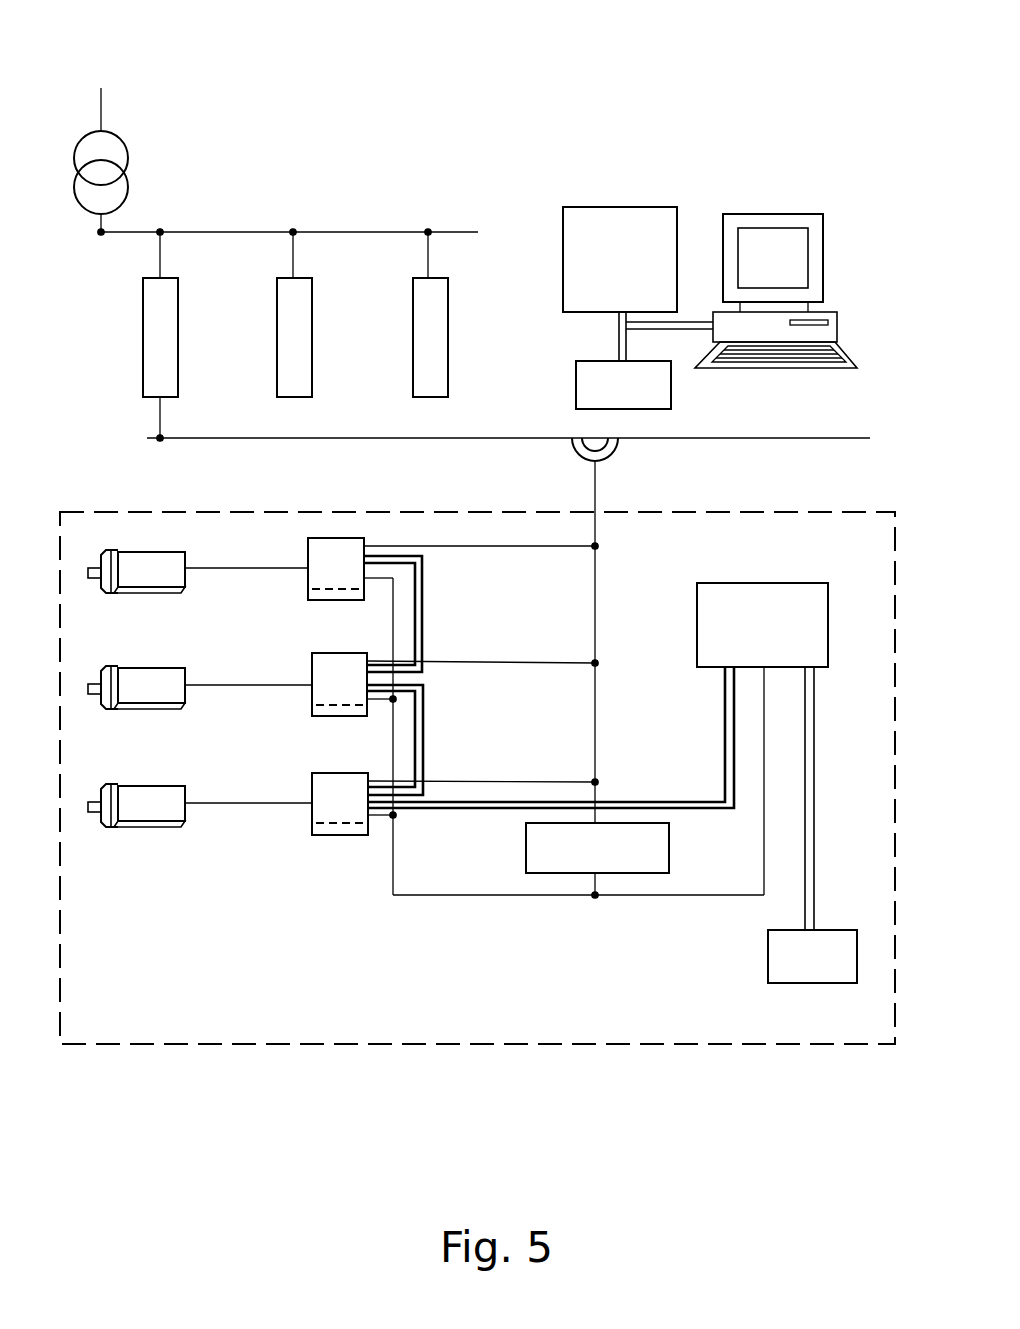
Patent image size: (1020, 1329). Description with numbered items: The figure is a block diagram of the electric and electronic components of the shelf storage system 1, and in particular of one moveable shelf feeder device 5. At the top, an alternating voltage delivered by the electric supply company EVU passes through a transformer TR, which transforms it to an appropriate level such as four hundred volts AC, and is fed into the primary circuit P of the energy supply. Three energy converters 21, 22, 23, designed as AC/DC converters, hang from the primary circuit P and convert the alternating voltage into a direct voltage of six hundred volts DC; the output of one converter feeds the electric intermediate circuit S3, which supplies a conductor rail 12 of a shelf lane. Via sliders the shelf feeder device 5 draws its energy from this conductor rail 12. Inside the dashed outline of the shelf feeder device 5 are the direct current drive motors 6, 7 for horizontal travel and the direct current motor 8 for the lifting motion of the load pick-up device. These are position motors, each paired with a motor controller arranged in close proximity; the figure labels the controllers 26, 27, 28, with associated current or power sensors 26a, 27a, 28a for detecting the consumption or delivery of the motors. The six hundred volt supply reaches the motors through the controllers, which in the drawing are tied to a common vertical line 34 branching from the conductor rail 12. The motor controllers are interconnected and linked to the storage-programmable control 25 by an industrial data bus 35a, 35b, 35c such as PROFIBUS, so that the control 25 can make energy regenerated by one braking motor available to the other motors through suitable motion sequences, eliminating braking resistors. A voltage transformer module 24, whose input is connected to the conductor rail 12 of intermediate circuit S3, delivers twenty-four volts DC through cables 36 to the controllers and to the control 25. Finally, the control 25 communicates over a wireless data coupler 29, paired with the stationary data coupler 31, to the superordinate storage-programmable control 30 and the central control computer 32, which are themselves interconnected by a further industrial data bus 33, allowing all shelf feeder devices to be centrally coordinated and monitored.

The shelf storage system 1 is at (352, 118).
The electric supply company EVU is at (90, 85).
The transformer TR is at (124, 141).
The primary circuit P is at (205, 232).
The energy converter 21 is at (413, 306).
The energy converter 22 is at (277, 306).
The energy converter 23 is at (143, 306).
The electric intermediate circuit S3 is at (158, 420).
The conductor rail 12 is at (528, 438).
The superordinate storage-programmable control 30 is at (598, 207).
The data coupler 31 is at (576, 381).
The central control computer 32 is at (748, 214).
The industrial data bus 33 is at (614, 334).
The shelf feeder device 5 is at (180, 1044).
The direct current drive motor 6 is at (147, 808).
The direct current drive motor 7 is at (138, 573).
The direct current motor 8 is at (138, 690).
The drive controller 26 is at (312, 786).
The drive controller interface 26a is at (340, 829).
The motor controller 27 is at (312, 669).
The sensor 27a is at (335, 711).
The motor controller 28 is at (308, 554).
The sensor 28a is at (330, 596).
The bus line 34 is at (597, 600).
The industrial data bus 35a is at (627, 800).
The industrial data bus 35b is at (424, 740).
The industrial data bus 35c is at (424, 617).
The cables 36 is at (392, 873).
The voltage transformer module 24 is at (559, 848).
The storage-programmable control 25 is at (697, 655).
The data coupler 29 is at (768, 956).